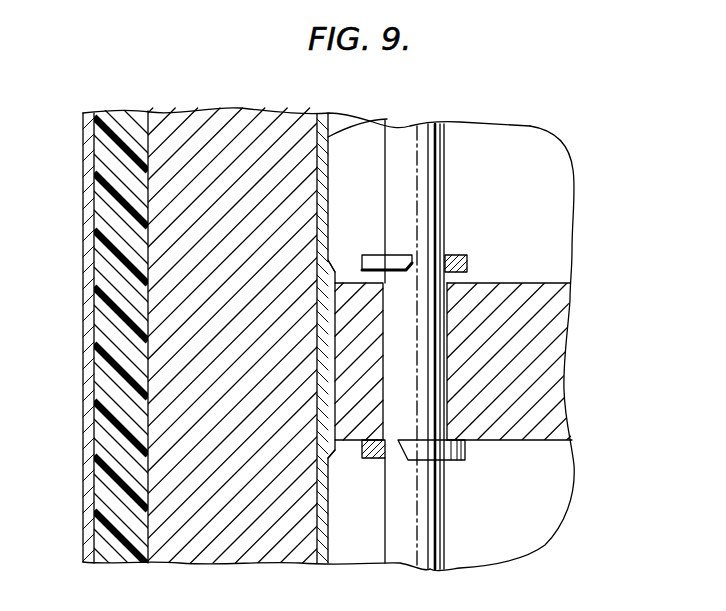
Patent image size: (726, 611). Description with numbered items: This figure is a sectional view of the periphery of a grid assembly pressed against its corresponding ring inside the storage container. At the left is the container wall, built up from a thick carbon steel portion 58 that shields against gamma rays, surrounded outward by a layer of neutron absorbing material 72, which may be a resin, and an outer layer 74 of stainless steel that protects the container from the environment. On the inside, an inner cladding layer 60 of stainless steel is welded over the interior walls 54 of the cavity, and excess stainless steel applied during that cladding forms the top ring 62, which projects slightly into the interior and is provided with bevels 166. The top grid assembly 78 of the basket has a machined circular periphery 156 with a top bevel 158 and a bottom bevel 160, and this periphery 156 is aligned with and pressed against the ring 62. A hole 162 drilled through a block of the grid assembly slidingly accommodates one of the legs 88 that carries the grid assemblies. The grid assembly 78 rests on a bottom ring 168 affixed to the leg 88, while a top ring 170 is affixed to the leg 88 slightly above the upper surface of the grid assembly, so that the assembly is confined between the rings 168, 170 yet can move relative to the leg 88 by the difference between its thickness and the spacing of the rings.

The interior walls 54 is at (385, 122).
The carbon steel portion 58 is at (198, 125).
The inner cladding layer 60 is at (326, 113).
The top ring 62 is at (317, 329).
The neutron absorbing material 72 is at (95, 168).
The outer layer 74 is at (86, 208).
The top grid assembly 78 is at (549, 372).
The legs 88 is at (430, 183).
The circular periphery 156 is at (335, 378).
The top bevel 158 is at (348, 268).
The bottom bevel 160 is at (342, 441).
The holes 162 is at (447, 421).
The bevels 166 is at (332, 258).
The bottom ring 168 is at (450, 461).
The top ring 170 is at (462, 256).